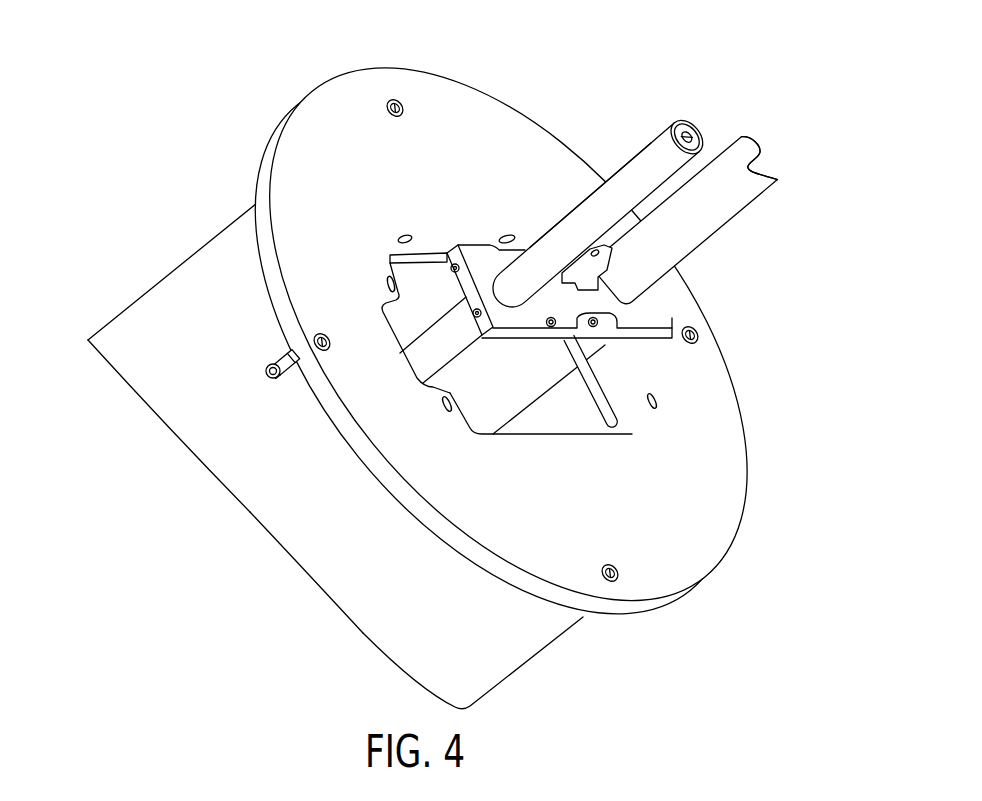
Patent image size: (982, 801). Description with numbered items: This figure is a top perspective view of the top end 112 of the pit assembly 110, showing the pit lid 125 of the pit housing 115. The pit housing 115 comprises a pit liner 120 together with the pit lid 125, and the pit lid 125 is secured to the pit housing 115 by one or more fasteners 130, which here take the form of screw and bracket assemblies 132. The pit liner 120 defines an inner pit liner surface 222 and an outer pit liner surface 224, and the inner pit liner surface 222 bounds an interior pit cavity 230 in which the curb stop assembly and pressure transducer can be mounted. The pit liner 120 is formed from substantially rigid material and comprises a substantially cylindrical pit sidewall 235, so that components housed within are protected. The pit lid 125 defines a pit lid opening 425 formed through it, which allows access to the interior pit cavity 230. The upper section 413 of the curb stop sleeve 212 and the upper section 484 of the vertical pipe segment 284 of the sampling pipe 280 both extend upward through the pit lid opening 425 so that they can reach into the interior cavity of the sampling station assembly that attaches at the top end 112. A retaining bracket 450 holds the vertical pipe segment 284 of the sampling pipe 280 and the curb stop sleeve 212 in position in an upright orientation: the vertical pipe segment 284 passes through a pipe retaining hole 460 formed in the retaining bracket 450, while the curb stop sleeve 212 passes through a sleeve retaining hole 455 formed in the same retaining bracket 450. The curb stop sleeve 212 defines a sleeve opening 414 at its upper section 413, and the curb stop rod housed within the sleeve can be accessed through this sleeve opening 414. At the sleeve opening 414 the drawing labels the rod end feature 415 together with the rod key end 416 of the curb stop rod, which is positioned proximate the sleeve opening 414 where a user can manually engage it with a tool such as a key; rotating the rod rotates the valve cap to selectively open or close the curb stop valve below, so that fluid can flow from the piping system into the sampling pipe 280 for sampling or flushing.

The pit assembly 110 is at (440, 354).
The top end 112 is at (471, 350).
The pit housing 115 is at (311, 456).
The pit liner 120 is at (263, 505).
The pit lid 125 is at (322, 285).
The fasteners 130 is at (263, 413).
The screw and bracket assemblies 132 is at (278, 380).
The curb stop sleeve 212 is at (628, 264).
The inner pit liner surface 222 is at (437, 278).
The outer pit liner surface 224 is at (367, 632).
The interior pit cavity 230 is at (572, 421).
The pit sidewall 235 is at (307, 565).
The sampling pipe 280 is at (704, 220).
The vertical pipe segment 284 is at (737, 193).
The upper section 413 is at (633, 163).
The sleeve opening 414 is at (687, 130).
The end cap insert 415 is at (720, 91).
The rod key end 416 is at (687, 140).
The pit lid opening 425 is at (421, 291).
The retaining bracket 450 is at (565, 303).
The sleeve retaining hole 455 is at (505, 295).
The pipe retaining hole 460 is at (620, 310).
The upper section 484 is at (743, 167).